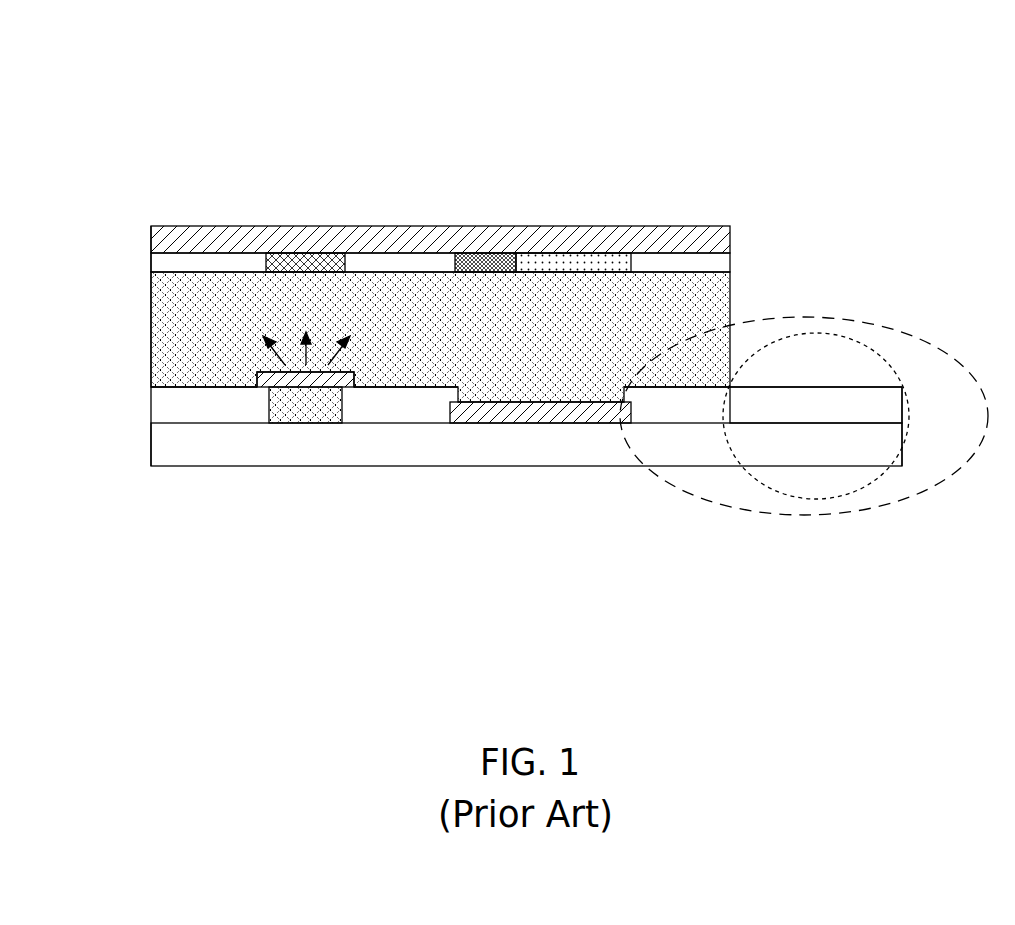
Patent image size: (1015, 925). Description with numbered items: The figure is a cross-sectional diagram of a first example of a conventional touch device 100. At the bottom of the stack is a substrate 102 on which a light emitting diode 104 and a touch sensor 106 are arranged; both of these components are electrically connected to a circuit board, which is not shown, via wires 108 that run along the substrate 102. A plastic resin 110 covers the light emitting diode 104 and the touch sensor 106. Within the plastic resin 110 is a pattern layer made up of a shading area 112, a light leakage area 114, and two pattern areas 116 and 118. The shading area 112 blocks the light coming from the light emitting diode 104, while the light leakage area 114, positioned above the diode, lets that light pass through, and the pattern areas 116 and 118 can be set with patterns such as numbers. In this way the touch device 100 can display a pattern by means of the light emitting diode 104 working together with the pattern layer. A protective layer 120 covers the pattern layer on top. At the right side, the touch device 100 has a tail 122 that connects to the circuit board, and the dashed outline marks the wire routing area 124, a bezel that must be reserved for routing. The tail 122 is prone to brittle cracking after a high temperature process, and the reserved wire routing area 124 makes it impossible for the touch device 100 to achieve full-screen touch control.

The touch device 100 is at (912, 120).
The substrate 102 is at (390, 458).
The light emitting diode 104 is at (262, 377).
The touch sensor 106 is at (540, 415).
The wires 108 is at (172, 408).
The plastic resin 110 is at (172, 325).
The shading area 112 is at (158, 264).
The light leakage area 114 is at (293, 270).
The pattern area 116 is at (482, 272).
The pattern area 118 is at (590, 272).
The protective layer 120 is at (210, 237).
The tail 122 is at (905, 415).
The wire routing area 124 is at (905, 330).